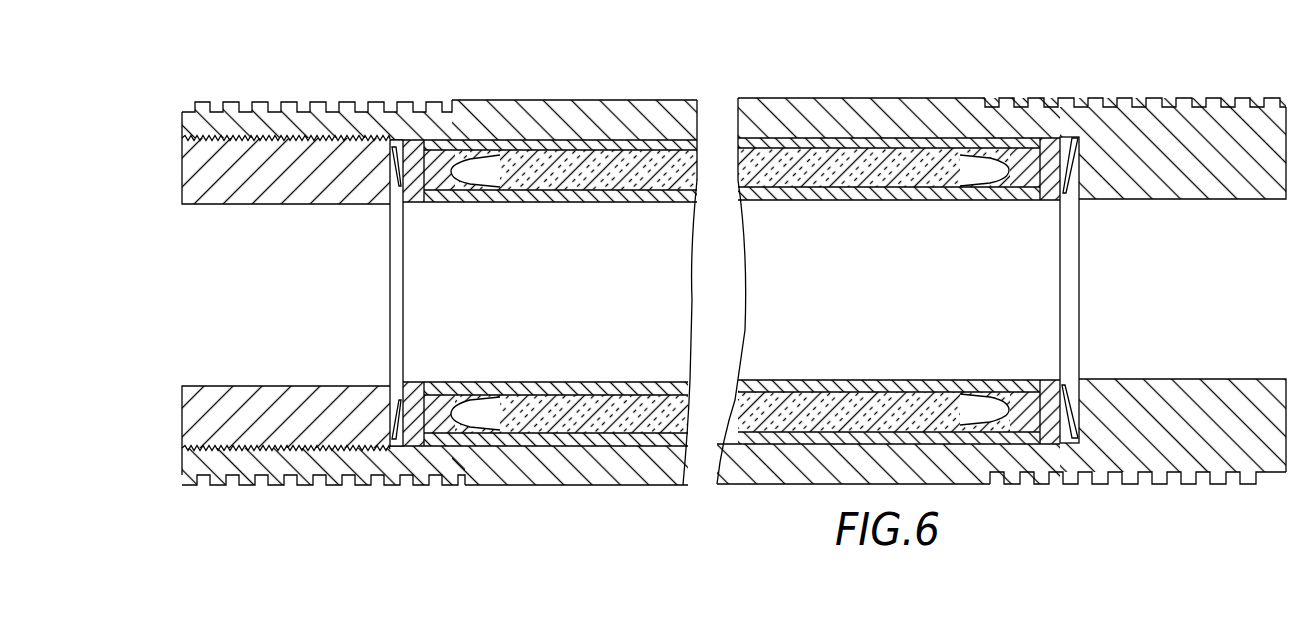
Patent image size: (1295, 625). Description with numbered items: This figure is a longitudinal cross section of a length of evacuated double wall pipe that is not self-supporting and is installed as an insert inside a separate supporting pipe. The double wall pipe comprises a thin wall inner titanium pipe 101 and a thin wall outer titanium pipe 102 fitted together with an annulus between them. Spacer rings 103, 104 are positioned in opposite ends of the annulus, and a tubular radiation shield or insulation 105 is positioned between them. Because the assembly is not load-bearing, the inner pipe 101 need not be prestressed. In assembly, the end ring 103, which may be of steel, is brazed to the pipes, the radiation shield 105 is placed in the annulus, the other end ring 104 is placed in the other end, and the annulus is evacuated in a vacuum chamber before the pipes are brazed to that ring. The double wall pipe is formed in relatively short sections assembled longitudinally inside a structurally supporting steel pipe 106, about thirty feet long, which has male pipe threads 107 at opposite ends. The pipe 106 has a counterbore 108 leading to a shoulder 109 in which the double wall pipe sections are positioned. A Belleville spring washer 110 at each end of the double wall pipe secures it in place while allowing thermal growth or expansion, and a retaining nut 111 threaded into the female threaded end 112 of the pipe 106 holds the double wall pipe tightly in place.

The thin wall inner titanium pipe 101 is at (928, 195).
The thin wall outer titanium pipe 102 is at (965, 141).
The spacer ring 103 is at (1050, 195).
The spacer ring 104 is at (447, 197).
The tubular radiation shield or insulation 105 is at (608, 175).
The supporting steel pipe 106 is at (1150, 135).
The male pipe threads 107 is at (340, 112).
The counterbore 108 is at (855, 138).
The shoulder 109 is at (1079, 188).
The Belleville spring washer 110 is at (392, 385).
The retaining nut 111 is at (288, 393).
The female threaded end 112 is at (212, 145).